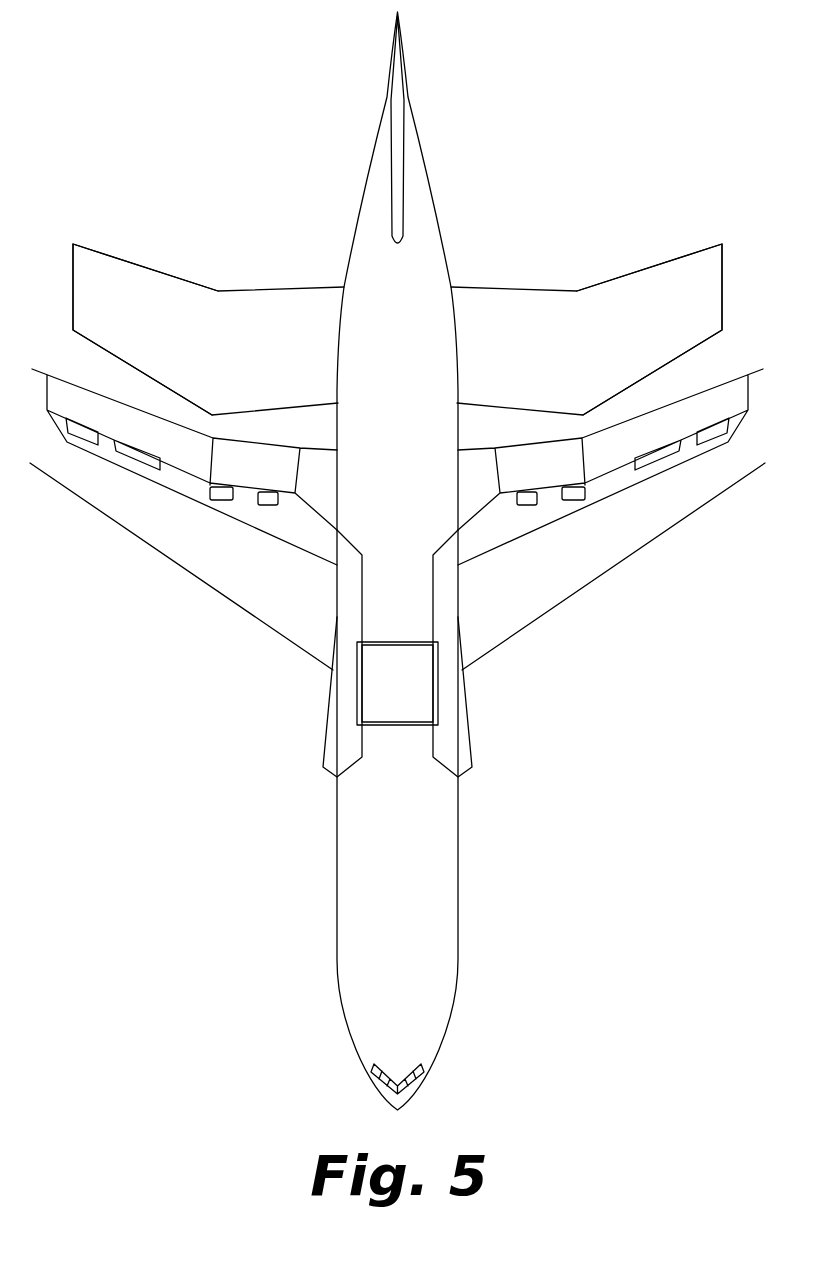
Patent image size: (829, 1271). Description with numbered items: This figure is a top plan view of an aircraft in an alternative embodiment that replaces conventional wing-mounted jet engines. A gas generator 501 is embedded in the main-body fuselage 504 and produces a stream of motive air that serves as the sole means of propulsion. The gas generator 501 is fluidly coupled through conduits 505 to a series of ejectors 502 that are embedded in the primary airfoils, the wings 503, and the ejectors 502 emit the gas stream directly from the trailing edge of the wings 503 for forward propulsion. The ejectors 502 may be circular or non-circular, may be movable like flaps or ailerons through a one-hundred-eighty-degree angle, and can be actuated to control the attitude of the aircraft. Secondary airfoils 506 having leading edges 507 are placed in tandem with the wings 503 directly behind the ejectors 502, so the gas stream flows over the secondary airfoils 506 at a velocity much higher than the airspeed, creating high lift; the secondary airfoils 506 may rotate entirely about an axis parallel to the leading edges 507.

The gas generator 501 is at (397, 683).
The ejectors 502 is at (397, 467).
The wings 503 is at (397, 566).
The main-body fuselage 504 is at (397, 561).
The conduits 505 is at (315, 530).
The secondary airfoils 506 is at (397, 329).
The leading edges 507 is at (192, 400).